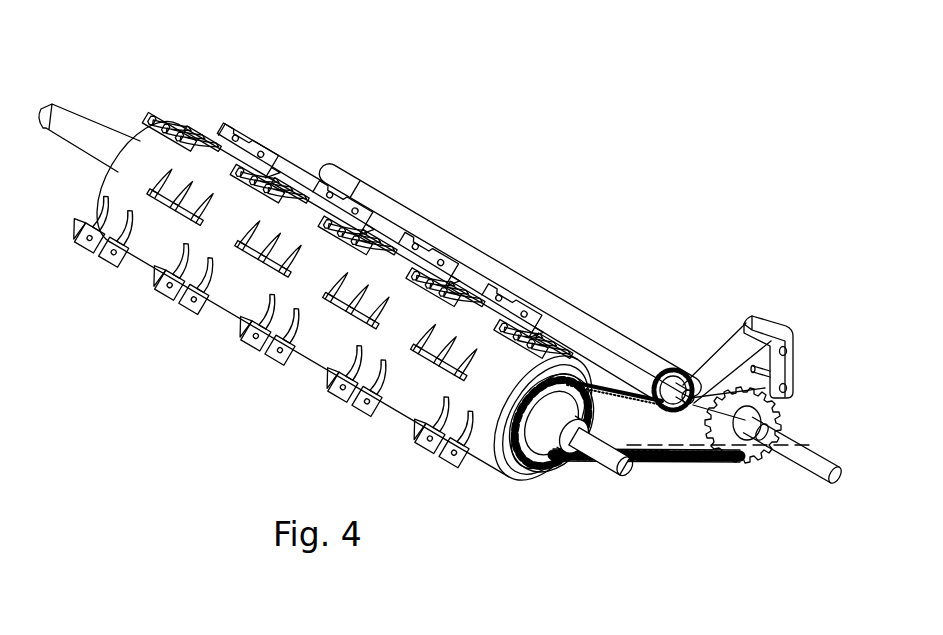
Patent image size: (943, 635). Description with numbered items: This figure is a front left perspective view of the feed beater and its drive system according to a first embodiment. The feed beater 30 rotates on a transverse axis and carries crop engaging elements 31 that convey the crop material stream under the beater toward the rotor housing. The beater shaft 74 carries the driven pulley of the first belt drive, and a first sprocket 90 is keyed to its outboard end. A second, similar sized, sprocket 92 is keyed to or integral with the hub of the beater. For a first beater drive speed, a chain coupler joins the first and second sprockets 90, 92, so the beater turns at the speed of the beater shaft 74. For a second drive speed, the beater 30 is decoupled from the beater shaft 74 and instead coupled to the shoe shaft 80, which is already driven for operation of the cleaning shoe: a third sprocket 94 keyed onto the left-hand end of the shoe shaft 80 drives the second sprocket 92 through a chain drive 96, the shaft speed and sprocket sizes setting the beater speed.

The feed beater 30 is at (240, 303).
The crop engaging elements 31 is at (160, 198).
The beater shaft 74 is at (72, 127).
The shoe shaft 80 is at (382, 197).
The first sprocket 90 is at (563, 467).
The second sprocket 92 is at (520, 462).
The third sprocket 94 is at (743, 440).
The chain drive 96 is at (670, 460).